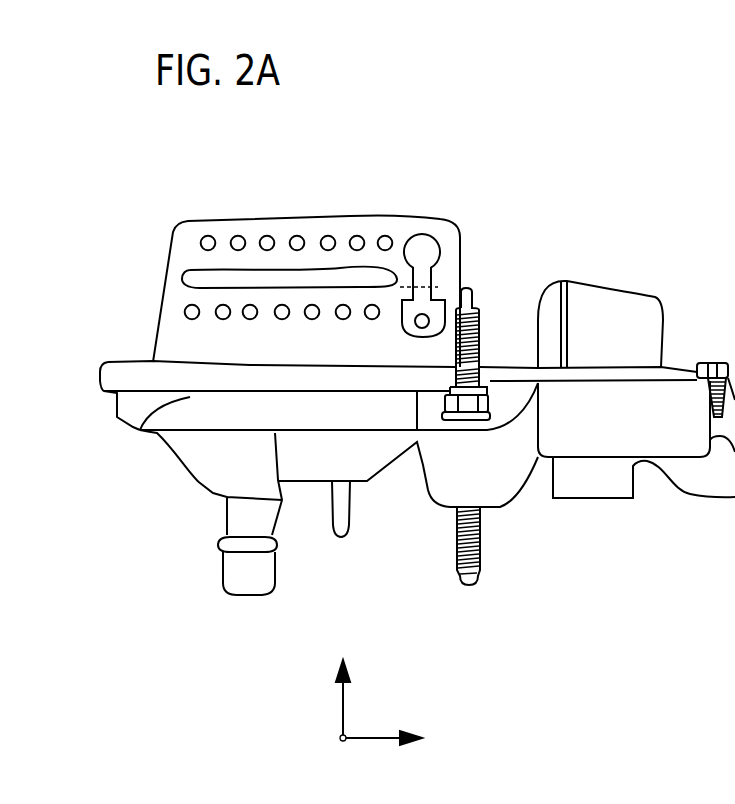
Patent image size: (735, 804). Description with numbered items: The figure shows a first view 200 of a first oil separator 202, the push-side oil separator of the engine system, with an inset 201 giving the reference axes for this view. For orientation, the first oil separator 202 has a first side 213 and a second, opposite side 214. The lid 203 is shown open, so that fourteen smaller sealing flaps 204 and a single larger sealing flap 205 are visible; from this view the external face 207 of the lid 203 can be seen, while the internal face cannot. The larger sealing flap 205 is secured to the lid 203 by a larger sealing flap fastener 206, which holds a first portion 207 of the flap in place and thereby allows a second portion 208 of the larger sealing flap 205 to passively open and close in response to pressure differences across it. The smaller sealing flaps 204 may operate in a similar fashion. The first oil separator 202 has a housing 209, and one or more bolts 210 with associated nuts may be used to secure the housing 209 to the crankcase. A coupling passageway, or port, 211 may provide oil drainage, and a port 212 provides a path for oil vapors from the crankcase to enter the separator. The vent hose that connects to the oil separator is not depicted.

The first view 200 is at (652, 105).
The inset 201 is at (440, 688).
The first oil separator 202 is at (373, 177).
The lid 203 is at (162, 316).
The smaller sealing flaps 204 is at (212, 244).
The larger sealing flap 205 is at (423, 250).
The larger sealing flap fastener 206 is at (423, 322).
The external face of lid / first portion of larger sealing flap 207 is at (248, 353).
The second portion of larger sealing flap 208 is at (446, 262).
The housing 209 is at (140, 432).
The bolts 210 is at (470, 322).
The coupling passageway or port 211 is at (232, 568).
The port 212 is at (627, 318).
The first side 213 is at (367, 420).
The second side 214 is at (535, 262).